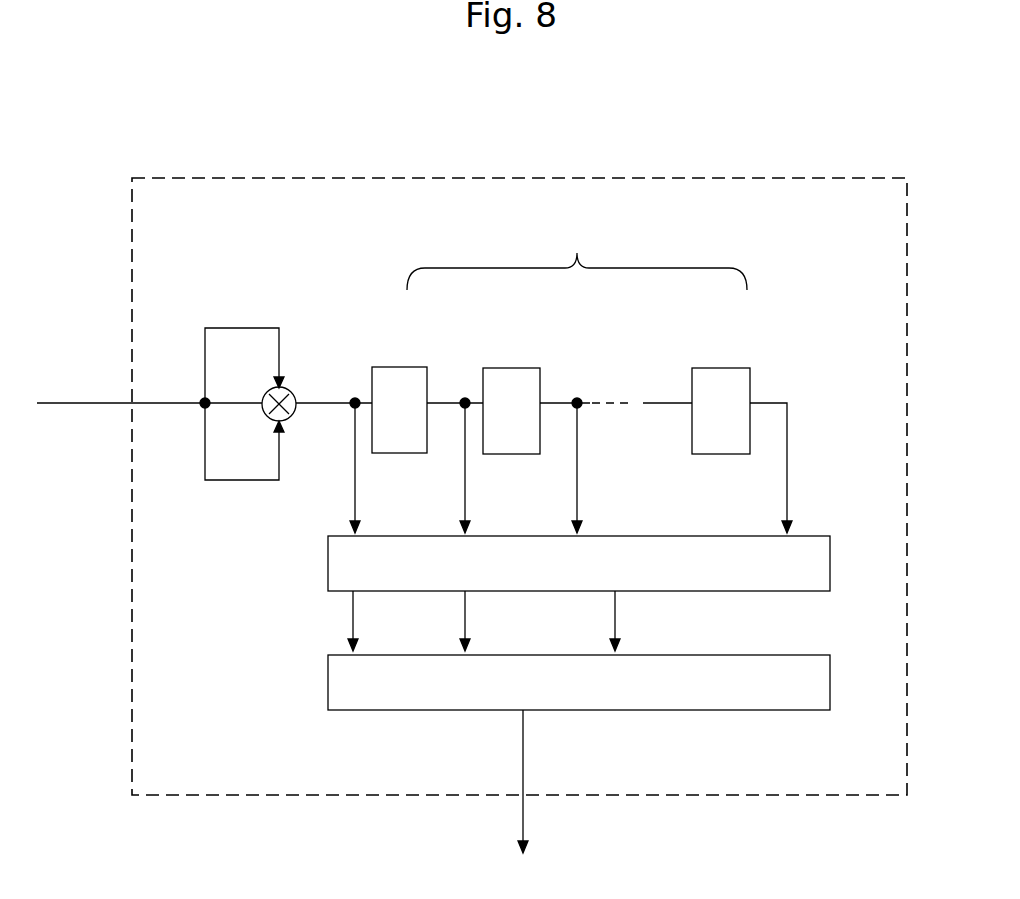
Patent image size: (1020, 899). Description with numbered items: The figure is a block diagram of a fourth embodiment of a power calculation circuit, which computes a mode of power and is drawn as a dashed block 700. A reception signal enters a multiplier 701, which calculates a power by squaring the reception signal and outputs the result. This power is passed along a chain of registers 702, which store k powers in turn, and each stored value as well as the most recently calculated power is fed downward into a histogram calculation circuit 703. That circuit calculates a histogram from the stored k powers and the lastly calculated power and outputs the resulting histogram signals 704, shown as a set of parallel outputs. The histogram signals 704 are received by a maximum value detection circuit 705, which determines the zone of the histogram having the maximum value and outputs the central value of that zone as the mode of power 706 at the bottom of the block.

The correlation/histogram processing block 700i 700 is at (519, 440).
The multiplier 701 is at (270, 390).
The registers 702 is at (574, 334).
The histogram calculation circuit 703 is at (592, 525).
The histogram signals 704 is at (521, 621).
The maximum value detection circuit 705 is at (541, 683).
The mode of power 706 is at (557, 781).